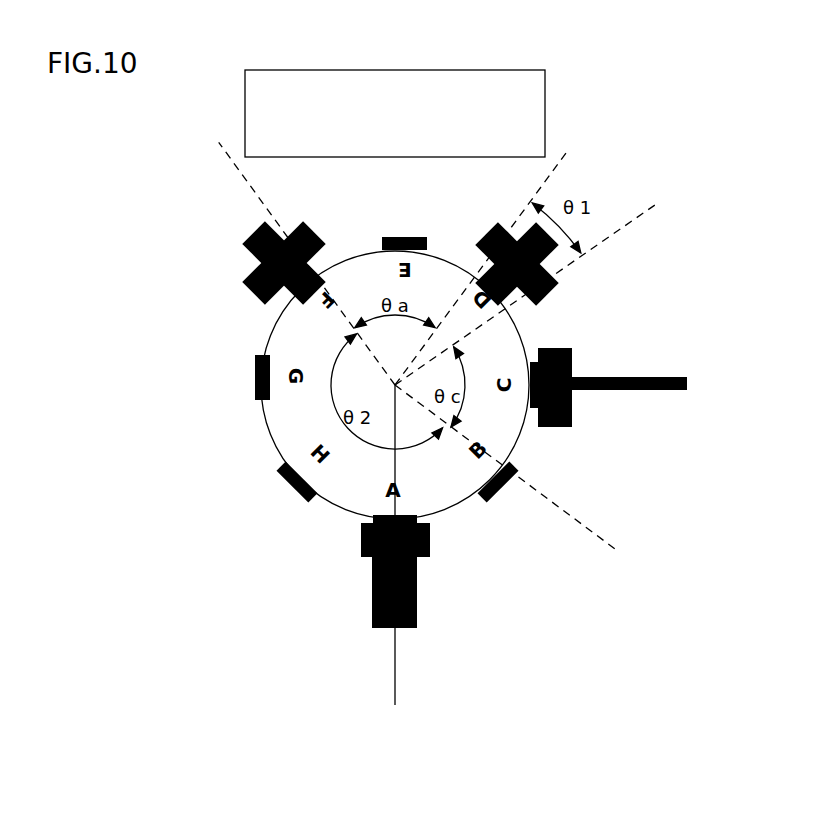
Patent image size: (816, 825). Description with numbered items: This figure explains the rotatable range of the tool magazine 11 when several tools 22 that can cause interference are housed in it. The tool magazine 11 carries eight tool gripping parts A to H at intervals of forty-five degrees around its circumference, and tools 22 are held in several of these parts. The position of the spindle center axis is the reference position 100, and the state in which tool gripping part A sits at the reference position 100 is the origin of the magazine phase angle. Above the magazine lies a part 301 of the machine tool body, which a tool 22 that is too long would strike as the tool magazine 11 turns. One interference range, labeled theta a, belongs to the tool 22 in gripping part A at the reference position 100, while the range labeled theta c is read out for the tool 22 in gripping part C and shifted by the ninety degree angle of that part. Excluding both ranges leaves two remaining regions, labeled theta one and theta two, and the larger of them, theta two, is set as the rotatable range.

The tool magazine 11 is at (350, 487).
The tool 22 is at (500, 238).
The reference position 100 is at (397, 673).
The part of the machine tool body 301 is at (400, 83).